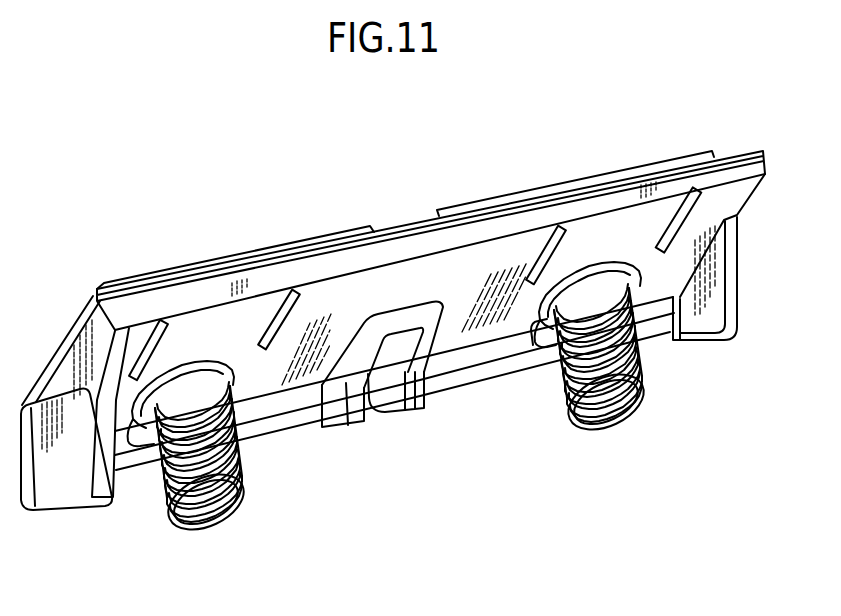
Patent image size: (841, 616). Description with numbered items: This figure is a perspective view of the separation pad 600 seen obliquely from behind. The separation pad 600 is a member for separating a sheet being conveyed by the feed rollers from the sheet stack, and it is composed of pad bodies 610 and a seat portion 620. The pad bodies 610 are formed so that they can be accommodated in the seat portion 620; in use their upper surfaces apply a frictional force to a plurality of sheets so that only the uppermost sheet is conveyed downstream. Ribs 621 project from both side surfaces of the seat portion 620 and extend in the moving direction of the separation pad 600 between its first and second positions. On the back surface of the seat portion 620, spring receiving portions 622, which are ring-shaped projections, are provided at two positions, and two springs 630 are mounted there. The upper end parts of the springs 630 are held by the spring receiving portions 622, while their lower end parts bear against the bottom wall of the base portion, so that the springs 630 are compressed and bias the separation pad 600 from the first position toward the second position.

The separation pad 600 is at (489, 460).
The pad bodies 610 is at (580, 172).
The seat portion 620 is at (700, 316).
The ribs 621 is at (60, 490).
The spring receiving portions 622 is at (535, 343).
The springs 630 is at (207, 522).